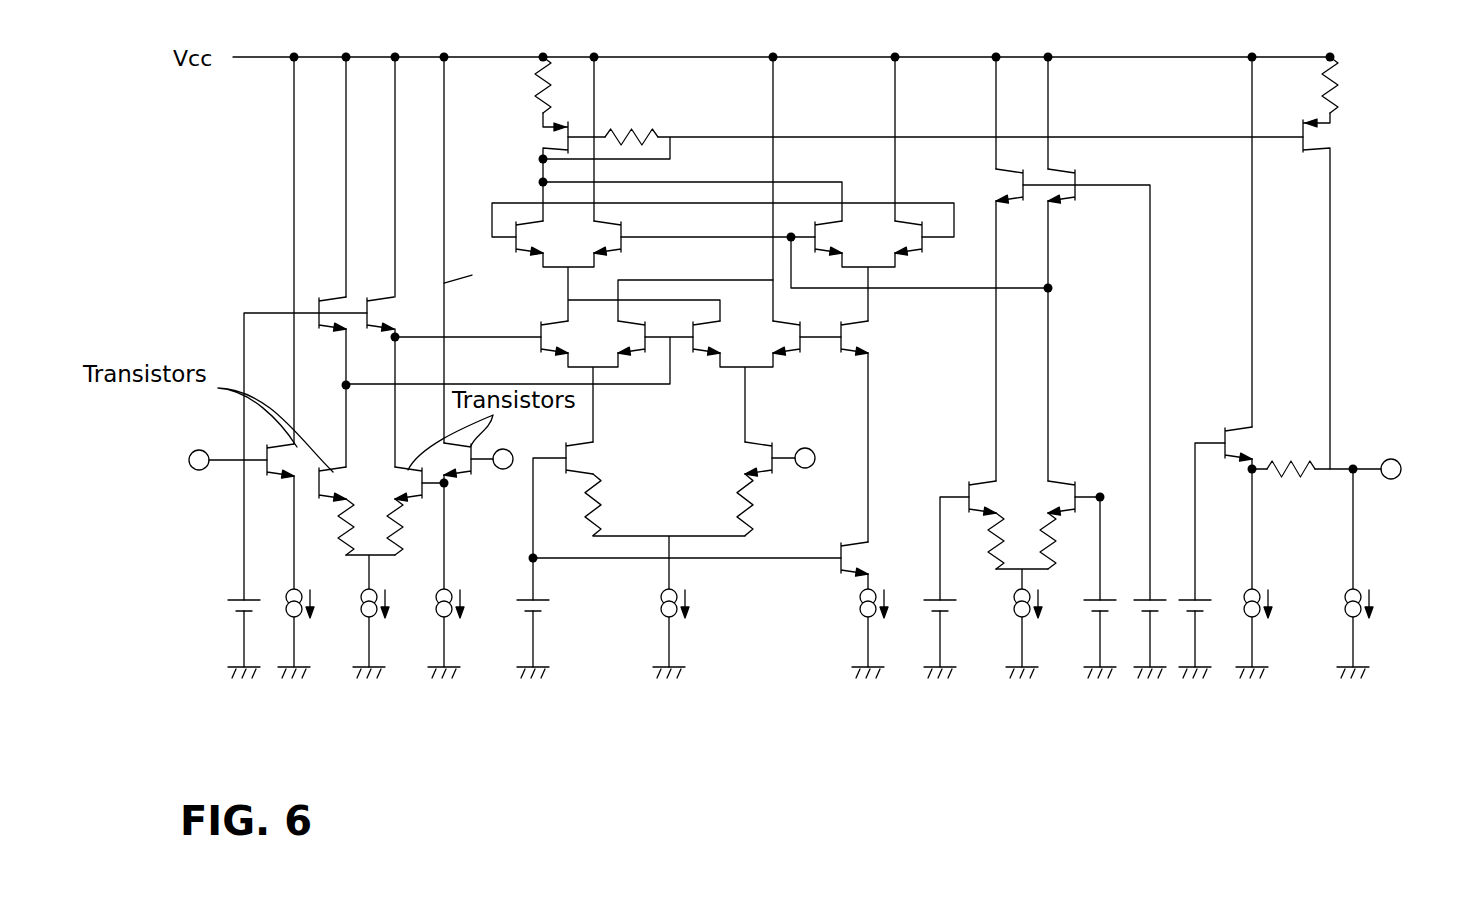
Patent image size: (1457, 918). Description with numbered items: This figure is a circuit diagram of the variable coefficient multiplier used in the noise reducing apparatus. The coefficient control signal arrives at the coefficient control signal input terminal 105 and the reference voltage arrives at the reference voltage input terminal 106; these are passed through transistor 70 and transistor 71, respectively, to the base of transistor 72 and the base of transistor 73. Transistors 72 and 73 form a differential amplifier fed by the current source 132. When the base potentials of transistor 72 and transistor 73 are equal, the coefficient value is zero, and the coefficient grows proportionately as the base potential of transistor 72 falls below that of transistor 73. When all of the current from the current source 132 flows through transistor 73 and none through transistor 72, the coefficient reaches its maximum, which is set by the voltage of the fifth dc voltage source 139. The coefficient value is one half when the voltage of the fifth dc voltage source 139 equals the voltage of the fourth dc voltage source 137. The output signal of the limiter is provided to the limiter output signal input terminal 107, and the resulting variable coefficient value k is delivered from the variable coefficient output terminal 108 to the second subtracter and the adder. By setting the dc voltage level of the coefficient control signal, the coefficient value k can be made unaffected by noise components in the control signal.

The coefficient control signal input terminal 105 is at (199, 470).
The transistor 70 is at (273, 477).
The transistor 72 is at (322, 499).
The transistor 73 is at (417, 499).
The transistor 71 is at (472, 476).
The current source 132 is at (360, 617).
The reference voltage input terminal 106 is at (504, 469).
The limiter output signal input terminal 107 is at (808, 468).
The fourth dc voltage source 137 is at (942, 611).
The fifth dc voltage source 139 is at (1107, 611).
The variable coefficient output terminal 108 is at (1394, 479).